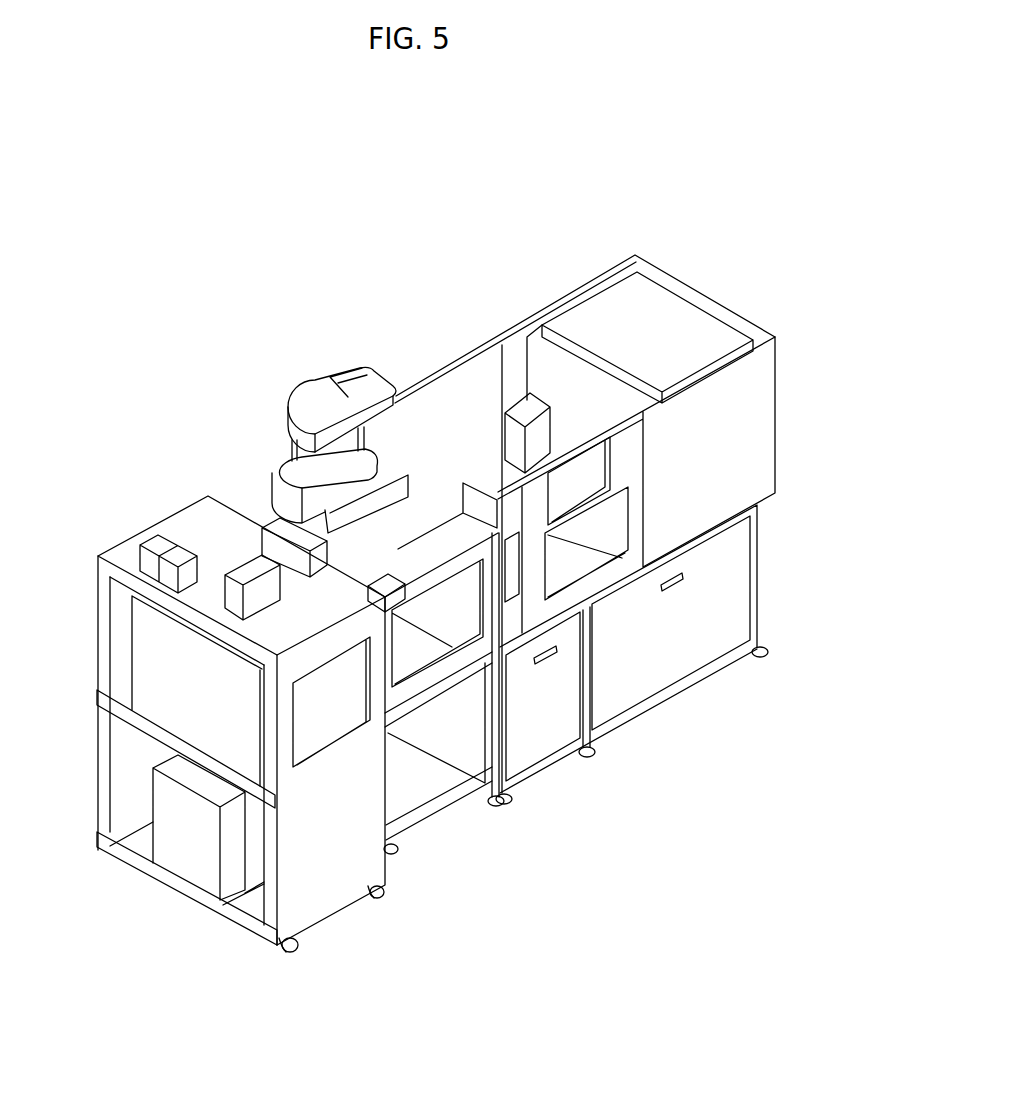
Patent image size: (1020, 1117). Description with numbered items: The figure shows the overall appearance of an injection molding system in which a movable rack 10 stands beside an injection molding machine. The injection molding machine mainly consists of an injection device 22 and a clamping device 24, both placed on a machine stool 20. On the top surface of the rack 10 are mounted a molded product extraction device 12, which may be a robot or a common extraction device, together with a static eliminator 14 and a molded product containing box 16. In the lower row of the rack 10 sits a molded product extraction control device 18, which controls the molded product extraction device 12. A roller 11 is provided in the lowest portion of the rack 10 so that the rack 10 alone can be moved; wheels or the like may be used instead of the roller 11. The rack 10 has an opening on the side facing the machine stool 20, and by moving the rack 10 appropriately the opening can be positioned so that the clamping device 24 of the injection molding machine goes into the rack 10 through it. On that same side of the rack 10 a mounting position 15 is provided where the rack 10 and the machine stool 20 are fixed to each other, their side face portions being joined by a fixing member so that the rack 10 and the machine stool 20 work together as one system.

The rack 10 is at (325, 882).
The roller 11 is at (382, 900).
The molded product extraction device 12 is at (327, 393).
The static eliminator 14 is at (247, 568).
The mounting position 15 is at (345, 748).
The molded product containing box 16 is at (148, 545).
The molded product extraction control device 18 is at (188, 848).
The machine stool 20 is at (670, 660).
The injection device 22 is at (677, 310).
The clamping device 24 is at (150, 664).